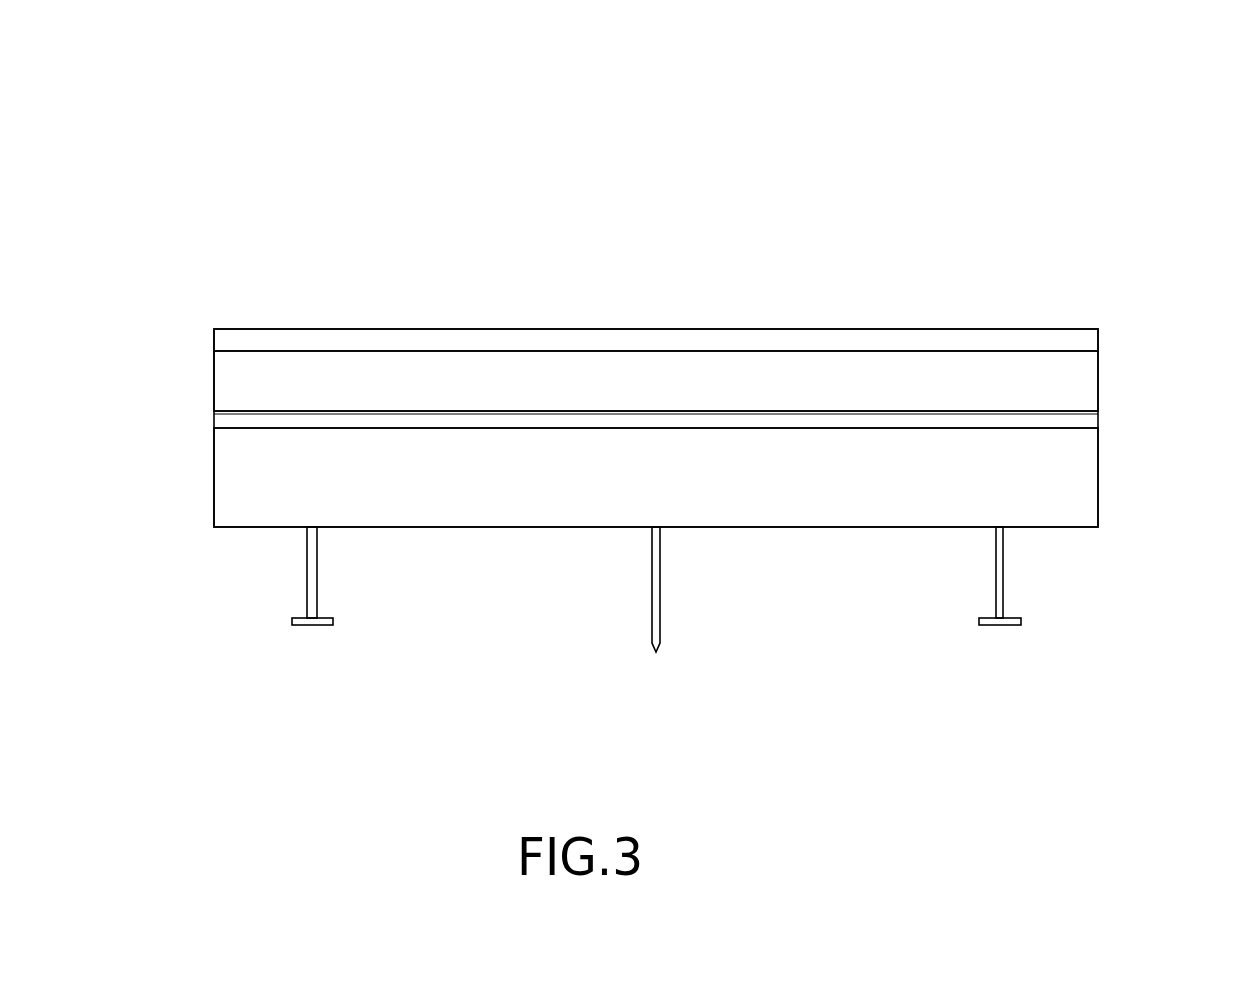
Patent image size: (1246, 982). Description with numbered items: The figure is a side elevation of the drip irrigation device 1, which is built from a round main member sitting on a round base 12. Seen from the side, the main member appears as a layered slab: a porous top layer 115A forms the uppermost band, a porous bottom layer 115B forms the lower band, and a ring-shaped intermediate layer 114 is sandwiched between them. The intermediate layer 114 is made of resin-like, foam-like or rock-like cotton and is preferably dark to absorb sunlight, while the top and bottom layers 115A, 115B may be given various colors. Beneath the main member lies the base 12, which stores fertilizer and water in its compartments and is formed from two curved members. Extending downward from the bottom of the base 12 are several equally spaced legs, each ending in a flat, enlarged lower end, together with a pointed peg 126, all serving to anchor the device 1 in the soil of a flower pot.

The drip irrigation device 1 is at (1103, 158).
The intermediate layer 114 is at (1080, 387).
The top layer 115A is at (227, 342).
The bottom layer 115B is at (218, 418).
The base 12 is at (267, 505).
The peg 126 is at (658, 595).